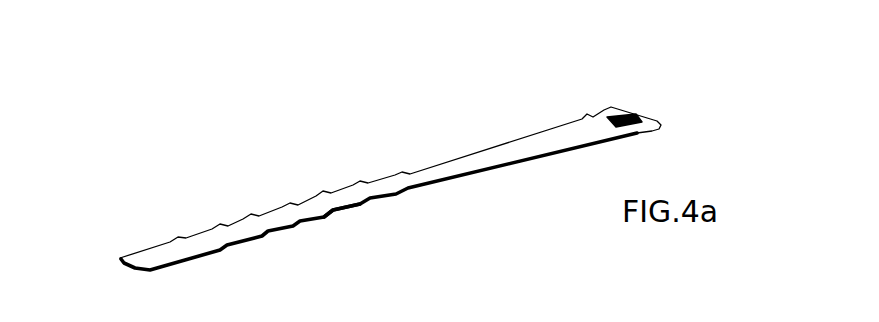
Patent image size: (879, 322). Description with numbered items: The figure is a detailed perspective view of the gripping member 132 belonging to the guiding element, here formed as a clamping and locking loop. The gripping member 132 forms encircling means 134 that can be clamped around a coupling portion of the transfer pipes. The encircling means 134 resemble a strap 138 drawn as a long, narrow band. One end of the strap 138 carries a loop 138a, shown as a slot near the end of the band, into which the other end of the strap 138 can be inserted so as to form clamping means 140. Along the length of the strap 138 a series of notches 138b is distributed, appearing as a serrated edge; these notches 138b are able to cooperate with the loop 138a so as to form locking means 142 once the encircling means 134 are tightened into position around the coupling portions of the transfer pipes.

The gripping member 132 is at (355, 183).
The encircling means 134 is at (339, 176).
The strap 138 is at (339, 176).
The loop 138a is at (627, 113).
The notches 138b is at (347, 218).
The clamping means 140 is at (421, 150).
The locking means 142 is at (562, 146).